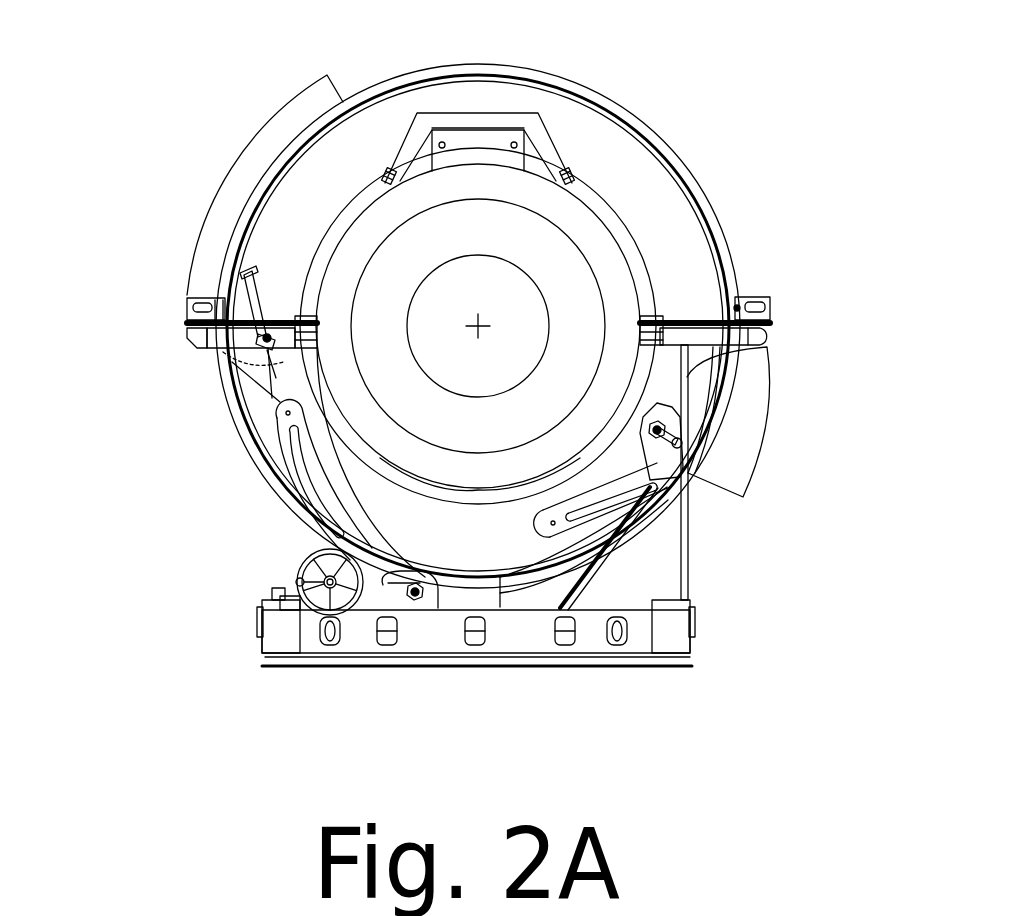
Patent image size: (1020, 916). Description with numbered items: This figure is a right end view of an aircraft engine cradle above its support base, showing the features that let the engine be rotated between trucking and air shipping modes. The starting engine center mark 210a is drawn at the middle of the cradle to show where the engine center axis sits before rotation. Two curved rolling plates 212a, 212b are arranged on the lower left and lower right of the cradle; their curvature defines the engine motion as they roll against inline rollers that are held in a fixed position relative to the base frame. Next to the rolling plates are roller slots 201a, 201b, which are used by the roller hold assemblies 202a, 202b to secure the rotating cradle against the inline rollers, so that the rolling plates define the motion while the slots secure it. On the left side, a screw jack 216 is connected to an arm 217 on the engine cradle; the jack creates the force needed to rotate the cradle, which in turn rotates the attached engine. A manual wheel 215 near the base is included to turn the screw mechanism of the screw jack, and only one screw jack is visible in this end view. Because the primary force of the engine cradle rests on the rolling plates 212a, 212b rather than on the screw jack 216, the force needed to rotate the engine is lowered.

The starting engine center mark 210a is at (478, 324).
The screw jack 216 is at (236, 278).
The arm 217 is at (258, 372).
The rolling plate 212a is at (298, 440).
The roller slot 201a is at (327, 522).
The manual wheel 215 is at (292, 577).
The roller hold assembly 202a is at (418, 600).
The roller hold assembly 202b is at (665, 432).
The rolling plate 212b is at (612, 503).
The roller slot 201b is at (607, 537).